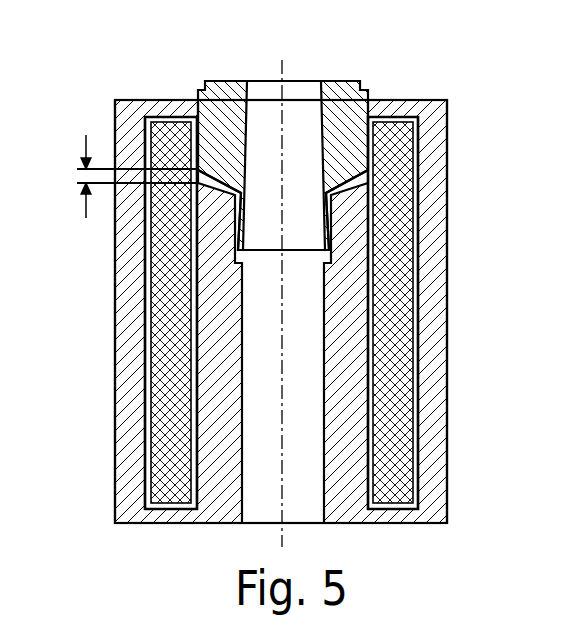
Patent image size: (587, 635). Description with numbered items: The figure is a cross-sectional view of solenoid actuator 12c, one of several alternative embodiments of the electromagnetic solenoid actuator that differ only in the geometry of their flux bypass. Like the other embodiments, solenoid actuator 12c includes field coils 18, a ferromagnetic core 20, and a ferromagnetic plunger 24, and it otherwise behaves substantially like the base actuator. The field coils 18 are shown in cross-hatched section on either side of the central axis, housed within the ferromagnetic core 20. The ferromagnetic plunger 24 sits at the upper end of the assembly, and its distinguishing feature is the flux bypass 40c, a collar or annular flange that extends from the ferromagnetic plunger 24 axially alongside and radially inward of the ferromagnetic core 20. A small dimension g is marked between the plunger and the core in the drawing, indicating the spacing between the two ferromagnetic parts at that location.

The solenoid actuator 12c is at (472, 68).
The field coils 18 is at (167, 385).
The ferromagnetic core 20 is at (125, 297).
The ferromagnetic plunger 24 is at (212, 97).
The flux bypass 40c is at (320, 212).
The gap g is at (130, 176).